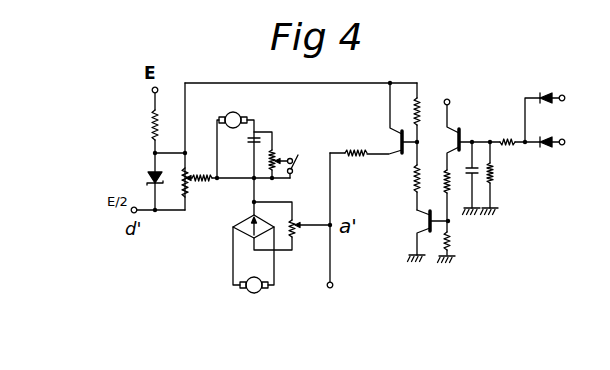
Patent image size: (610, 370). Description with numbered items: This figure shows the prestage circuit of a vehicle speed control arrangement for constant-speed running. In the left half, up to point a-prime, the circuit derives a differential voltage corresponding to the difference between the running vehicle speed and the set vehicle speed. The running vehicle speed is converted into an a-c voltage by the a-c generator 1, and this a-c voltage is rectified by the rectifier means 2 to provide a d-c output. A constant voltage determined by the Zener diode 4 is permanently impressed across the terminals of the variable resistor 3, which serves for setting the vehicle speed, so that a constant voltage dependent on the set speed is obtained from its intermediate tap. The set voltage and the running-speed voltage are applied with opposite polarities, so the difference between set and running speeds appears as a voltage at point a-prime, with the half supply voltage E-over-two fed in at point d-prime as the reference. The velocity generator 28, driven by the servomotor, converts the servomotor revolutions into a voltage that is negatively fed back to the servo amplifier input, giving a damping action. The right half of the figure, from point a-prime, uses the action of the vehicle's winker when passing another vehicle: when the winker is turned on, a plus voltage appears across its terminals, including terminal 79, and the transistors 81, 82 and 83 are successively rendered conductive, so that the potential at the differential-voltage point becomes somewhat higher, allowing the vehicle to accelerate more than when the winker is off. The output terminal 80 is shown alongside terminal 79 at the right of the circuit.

The a-c generator 1 is at (254, 293).
The rectifier means 2 is at (232, 226).
The variable resistor 3 is at (199, 185).
The Zener diode 4 is at (149, 175).
The velocity generator 28 is at (235, 134).
The winker terminal 79 is at (565, 98).
The output diode 80 is at (565, 142).
The transistor 81 is at (460, 133).
The transistor 82 is at (424, 222).
The transistor 83 is at (373, 132).